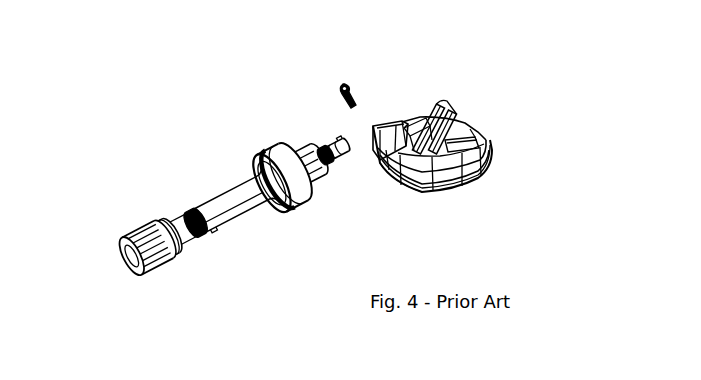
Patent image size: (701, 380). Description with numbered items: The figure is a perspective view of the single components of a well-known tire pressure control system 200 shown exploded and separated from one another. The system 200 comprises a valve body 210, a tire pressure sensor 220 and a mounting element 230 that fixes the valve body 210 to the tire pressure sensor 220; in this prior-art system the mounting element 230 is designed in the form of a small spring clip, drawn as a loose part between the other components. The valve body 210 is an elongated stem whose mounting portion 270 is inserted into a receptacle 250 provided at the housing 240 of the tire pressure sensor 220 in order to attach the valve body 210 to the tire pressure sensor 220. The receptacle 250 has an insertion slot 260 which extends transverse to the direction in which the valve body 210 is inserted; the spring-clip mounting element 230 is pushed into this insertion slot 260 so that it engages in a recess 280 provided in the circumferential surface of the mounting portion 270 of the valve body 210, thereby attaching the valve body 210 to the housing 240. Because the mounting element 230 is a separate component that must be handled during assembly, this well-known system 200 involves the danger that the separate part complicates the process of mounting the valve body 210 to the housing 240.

The tire pressure control system 200 is at (338, 156).
The valve body 210 is at (184, 213).
The tire pressure sensor 220 is at (456, 150).
The mounting element 230 is at (348, 85).
The housing 240 is at (488, 181).
The receptacle 250 is at (380, 155).
The insertion slot 260 is at (374, 127).
The mounting portion 270 is at (322, 148).
The recess 280 is at (325, 156).